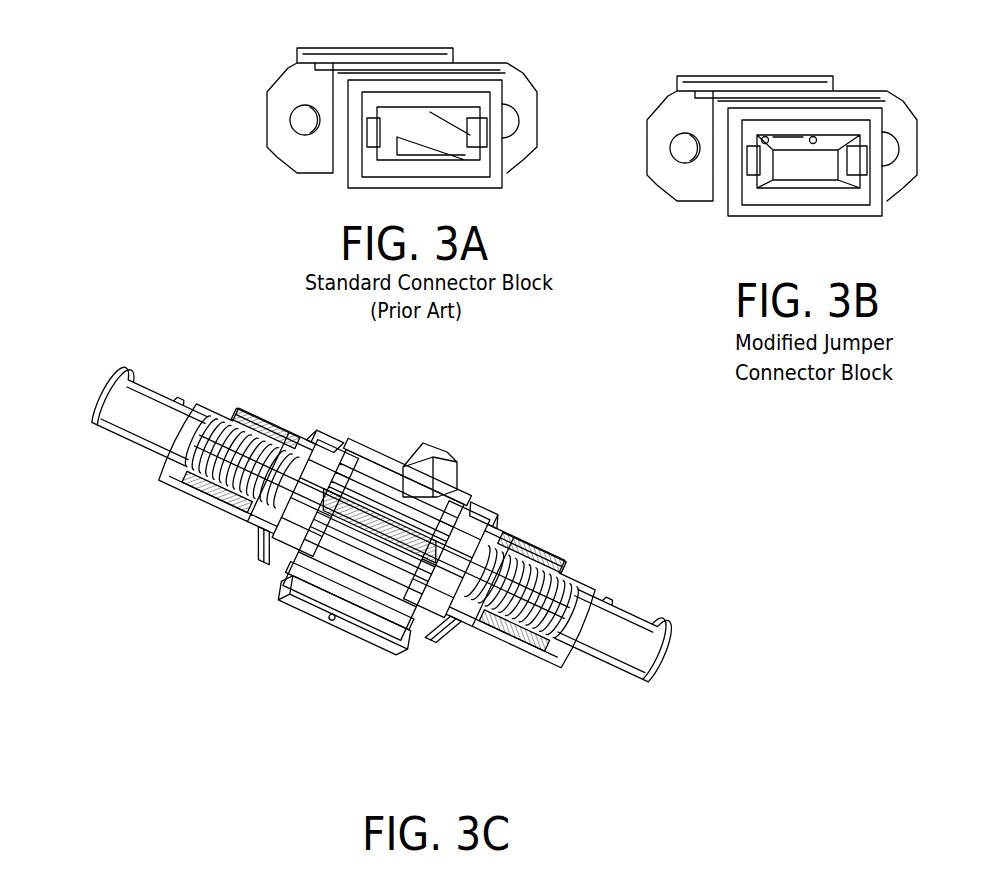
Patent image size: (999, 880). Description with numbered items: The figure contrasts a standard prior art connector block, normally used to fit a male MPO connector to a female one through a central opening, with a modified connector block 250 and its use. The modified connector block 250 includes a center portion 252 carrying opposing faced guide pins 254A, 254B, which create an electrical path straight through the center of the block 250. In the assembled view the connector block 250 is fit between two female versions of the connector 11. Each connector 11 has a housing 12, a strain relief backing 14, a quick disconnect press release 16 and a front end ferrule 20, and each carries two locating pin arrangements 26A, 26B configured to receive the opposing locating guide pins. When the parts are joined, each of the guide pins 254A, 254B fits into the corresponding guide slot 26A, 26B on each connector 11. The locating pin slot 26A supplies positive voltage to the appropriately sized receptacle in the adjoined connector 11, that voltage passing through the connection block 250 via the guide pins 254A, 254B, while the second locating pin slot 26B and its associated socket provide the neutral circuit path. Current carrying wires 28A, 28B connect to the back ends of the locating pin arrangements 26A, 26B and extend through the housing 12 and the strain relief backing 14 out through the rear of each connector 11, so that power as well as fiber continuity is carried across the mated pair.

In FIG. 3C, the connector 11 is at (147, 637).
In FIG. 3C, the housing 12 is at (157, 478).
In FIG. 3C, the strain relief backing 14 is at (92, 437).
In FIG. 3C, the quick disconnect press release 16 is at (197, 503).
In FIG. 3C, the front end ferrule 20 is at (305, 460).
In FIG. 3C, the locating pin slot 26A is at (303, 573).
In FIG. 3C, the second locating pin slot 26B is at (356, 458).
In FIG. 3C, the current carrying wire 28A is at (253, 542).
In FIG. 3C, the current carrying wire 28B is at (322, 480).
In FIG. 3B, the connector block 250 is at (873, 208).
In FIG. 3C, the connector block 250 is at (330, 623).
In FIG. 3B, the center portion 252 is at (790, 150).
In FIG. 3B, the guide pin 254A is at (763, 137).
In FIG. 3C, the guide pin 254A is at (332, 618).
In FIG. 3B, the guide pin 254B is at (817, 135).
In FIG. 3C, the guide pin 254B is at (367, 465).